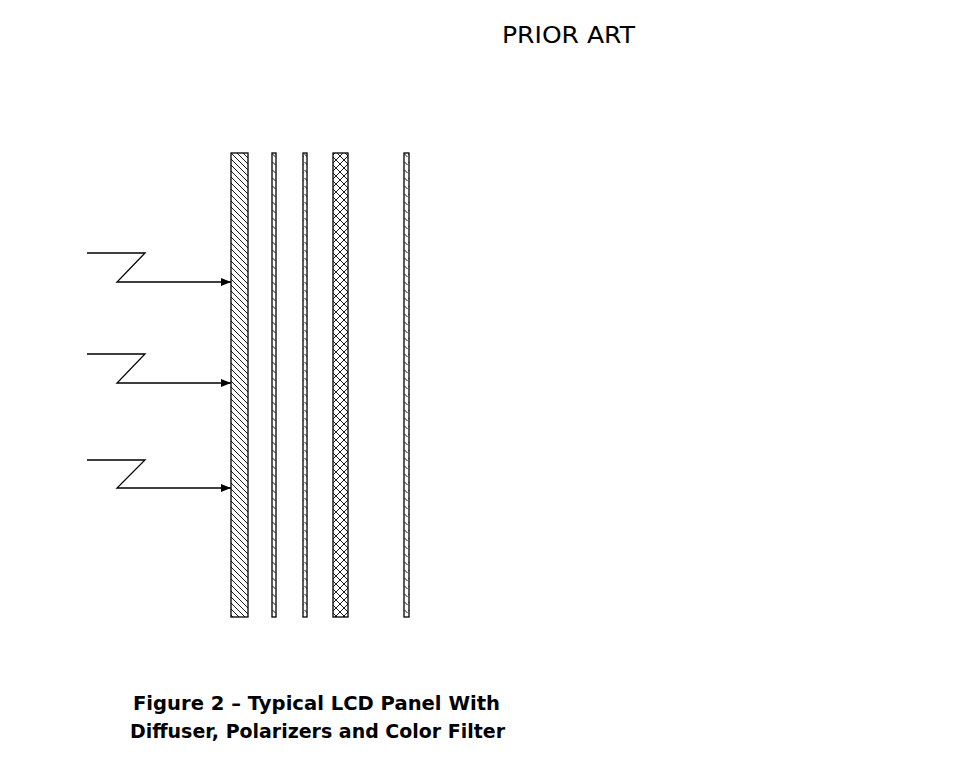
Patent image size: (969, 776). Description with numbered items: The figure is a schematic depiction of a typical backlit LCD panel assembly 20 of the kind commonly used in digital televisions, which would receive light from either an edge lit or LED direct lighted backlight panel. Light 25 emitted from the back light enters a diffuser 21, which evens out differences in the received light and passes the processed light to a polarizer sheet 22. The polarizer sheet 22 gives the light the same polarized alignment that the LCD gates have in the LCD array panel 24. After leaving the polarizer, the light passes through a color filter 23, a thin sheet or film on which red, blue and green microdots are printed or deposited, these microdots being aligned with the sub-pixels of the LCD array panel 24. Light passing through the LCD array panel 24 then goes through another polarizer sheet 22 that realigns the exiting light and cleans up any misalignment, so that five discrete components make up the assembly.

The LCD panel assembly 20 is at (192, 95).
The diffuser 21 is at (240, 151).
The polarizer sheet 22 is at (274, 151).
The color filter 23 is at (304, 618).
The LCD array panel 24 is at (350, 178).
The light 25 is at (117, 252).